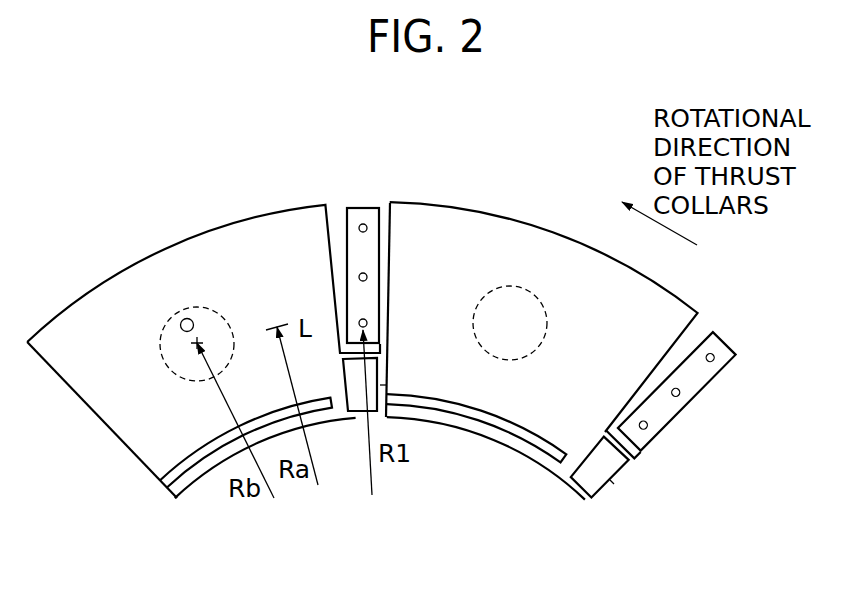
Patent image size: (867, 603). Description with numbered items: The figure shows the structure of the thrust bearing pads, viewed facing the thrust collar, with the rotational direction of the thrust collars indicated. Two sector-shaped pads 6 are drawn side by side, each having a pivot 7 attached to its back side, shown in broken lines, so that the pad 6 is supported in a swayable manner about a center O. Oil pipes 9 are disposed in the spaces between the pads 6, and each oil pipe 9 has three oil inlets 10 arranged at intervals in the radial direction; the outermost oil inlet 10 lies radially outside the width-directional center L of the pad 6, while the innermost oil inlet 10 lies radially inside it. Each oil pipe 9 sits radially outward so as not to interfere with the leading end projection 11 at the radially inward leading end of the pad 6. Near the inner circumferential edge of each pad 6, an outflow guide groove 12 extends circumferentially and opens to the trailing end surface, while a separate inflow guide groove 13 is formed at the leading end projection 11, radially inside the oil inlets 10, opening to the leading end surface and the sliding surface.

The pad 6 is at (132, 263).
The pivot 7 is at (203, 307).
The oil pipe 9 is at (363, 207).
The oil inlet 10 is at (363, 224).
The leading end projection 11 is at (382, 385).
The outflow guide groove 12 is at (195, 462).
The inflow guide groove 13 is at (358, 408).